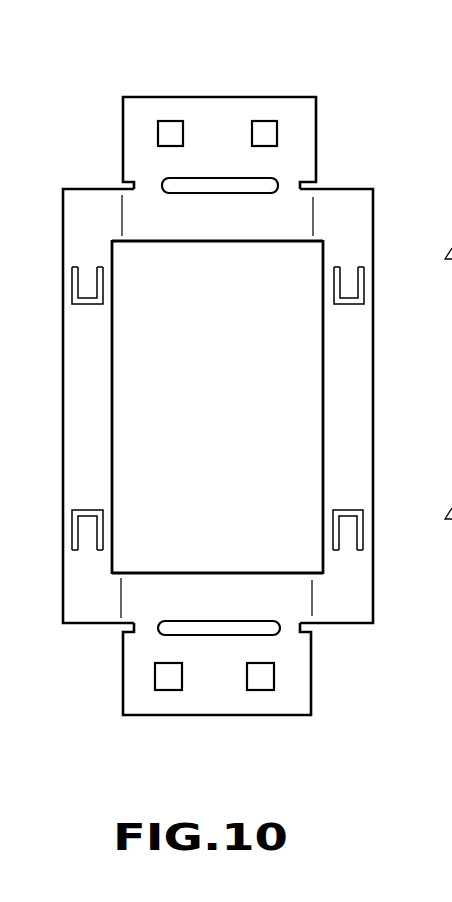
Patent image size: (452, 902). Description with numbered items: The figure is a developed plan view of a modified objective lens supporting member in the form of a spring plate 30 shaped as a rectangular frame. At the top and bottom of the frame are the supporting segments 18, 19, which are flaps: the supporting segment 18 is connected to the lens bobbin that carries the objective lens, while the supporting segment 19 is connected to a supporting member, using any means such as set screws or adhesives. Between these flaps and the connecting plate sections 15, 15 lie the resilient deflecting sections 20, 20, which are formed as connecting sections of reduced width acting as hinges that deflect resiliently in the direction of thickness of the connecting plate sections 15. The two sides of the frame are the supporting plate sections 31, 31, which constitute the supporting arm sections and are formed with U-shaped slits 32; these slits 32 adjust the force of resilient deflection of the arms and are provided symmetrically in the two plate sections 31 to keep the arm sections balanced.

The spring plate 30 is at (232, 73).
The supporting segment 18 is at (265, 107).
The supporting segment 19 is at (187, 705).
The resilient deflecting section 20 is at (208, 185).
The connecting plate section 15 is at (233, 222).
The supporting plate section 31 is at (99, 363).
The U-shaped slit 32 is at (72, 286).